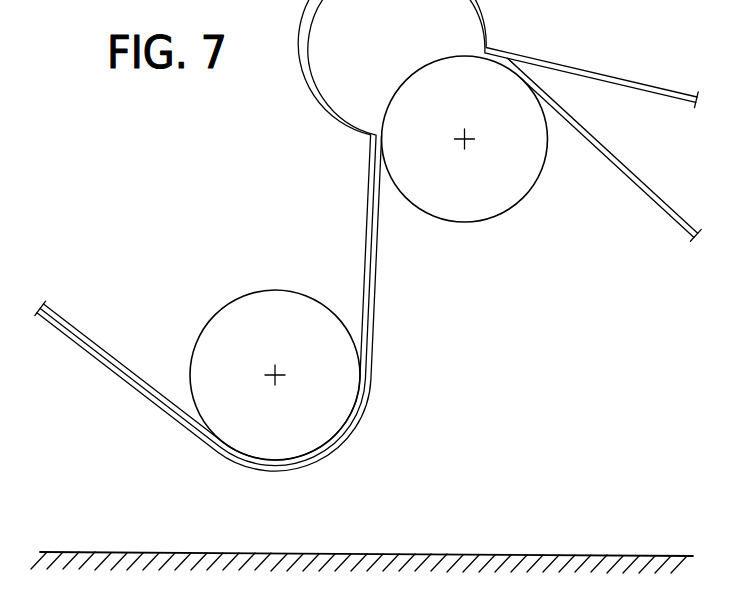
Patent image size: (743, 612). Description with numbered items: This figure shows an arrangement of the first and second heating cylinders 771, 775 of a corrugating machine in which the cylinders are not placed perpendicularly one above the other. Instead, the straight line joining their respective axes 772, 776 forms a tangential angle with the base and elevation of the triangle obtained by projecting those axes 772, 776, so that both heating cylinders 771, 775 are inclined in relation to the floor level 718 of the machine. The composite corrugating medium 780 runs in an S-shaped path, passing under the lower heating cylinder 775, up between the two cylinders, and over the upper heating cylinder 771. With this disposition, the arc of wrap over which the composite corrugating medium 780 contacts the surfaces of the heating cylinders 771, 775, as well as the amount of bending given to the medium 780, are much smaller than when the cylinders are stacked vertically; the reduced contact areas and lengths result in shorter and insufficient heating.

The floor level 718 is at (553, 556).
The first heating cylinder 771 is at (472, 208).
The axis of first heating cylinder 772 is at (460, 136).
The second heating cylinder 775 is at (278, 445).
The axis of second heating cylinder 776 is at (273, 368).
The composite corrugating medium 780 is at (366, 179).